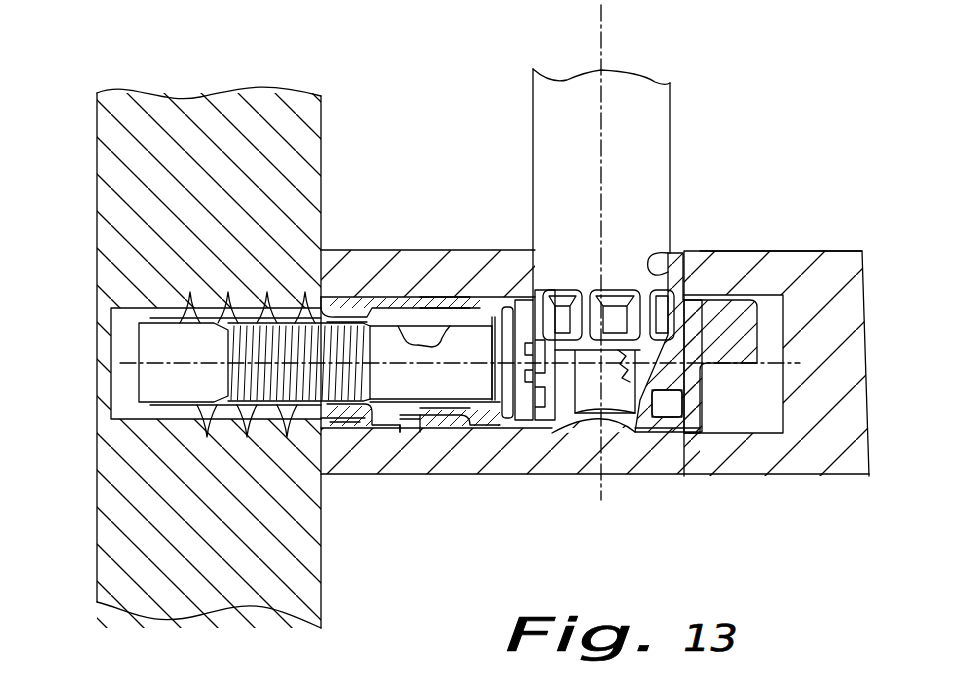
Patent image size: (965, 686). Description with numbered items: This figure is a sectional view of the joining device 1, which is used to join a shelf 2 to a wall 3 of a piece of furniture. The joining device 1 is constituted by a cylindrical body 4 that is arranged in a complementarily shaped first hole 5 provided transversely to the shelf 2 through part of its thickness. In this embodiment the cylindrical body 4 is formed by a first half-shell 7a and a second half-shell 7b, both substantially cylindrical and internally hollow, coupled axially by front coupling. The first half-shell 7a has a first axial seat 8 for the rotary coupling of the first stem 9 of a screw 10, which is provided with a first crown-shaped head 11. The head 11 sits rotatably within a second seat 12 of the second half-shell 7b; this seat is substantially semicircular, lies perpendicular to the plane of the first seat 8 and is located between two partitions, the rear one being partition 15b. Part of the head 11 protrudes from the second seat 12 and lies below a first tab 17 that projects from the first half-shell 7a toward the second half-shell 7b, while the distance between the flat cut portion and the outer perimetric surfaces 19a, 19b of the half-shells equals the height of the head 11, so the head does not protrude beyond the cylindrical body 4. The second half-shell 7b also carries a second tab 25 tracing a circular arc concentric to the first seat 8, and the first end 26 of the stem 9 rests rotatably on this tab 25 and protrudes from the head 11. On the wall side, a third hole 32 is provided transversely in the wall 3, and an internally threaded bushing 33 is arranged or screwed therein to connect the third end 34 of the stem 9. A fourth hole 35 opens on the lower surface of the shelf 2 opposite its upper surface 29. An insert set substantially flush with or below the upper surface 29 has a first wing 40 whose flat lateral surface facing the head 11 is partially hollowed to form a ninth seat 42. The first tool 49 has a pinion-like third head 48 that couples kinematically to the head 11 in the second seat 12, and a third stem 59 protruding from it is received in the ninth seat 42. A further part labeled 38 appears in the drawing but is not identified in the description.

The joining device 1 is at (760, 110).
The shelf 2 is at (832, 288).
The wall 3 is at (137, 120).
The cylindrical body 4 is at (541, 444).
The first hole 5 is at (770, 345).
The first half-shell 7a is at (362, 300).
The second half-shell 7b is at (752, 300).
The first axial seat 8 is at (398, 300).
The first stem 9 is at (232, 400).
The screw 10 is at (372, 418).
The first crown-shaped head 11 is at (435, 282).
The second seat 12 is at (512, 410).
The partition 15b is at (568, 410).
The first tab 17 is at (495, 286).
The outer perimetric surface of the first half-shell 19a is at (421, 324).
The outer perimetric surface of the second half-shell 19b is at (712, 290).
The second tab 25 is at (412, 432).
The first end 26 is at (450, 410).
The upper surface 29 is at (828, 243).
The third hole 32 is at (127, 373).
The internally threaded bushing 33 is at (152, 410).
The third end 34 is at (262, 353).
The fourth hole 35 is at (559, 468).
The hook 38 is at (668, 248).
The first wing 40 is at (670, 400).
The ninth seat 42 is at (640, 388).
The third head 48 is at (567, 286).
The first tool 49 is at (525, 93).
The third stem 59 is at (612, 398).